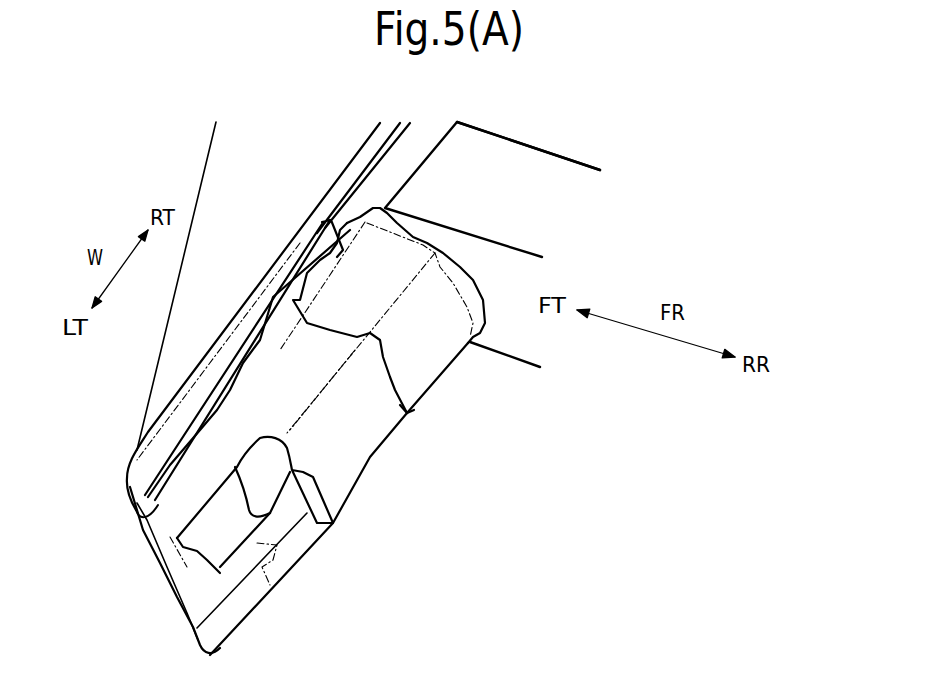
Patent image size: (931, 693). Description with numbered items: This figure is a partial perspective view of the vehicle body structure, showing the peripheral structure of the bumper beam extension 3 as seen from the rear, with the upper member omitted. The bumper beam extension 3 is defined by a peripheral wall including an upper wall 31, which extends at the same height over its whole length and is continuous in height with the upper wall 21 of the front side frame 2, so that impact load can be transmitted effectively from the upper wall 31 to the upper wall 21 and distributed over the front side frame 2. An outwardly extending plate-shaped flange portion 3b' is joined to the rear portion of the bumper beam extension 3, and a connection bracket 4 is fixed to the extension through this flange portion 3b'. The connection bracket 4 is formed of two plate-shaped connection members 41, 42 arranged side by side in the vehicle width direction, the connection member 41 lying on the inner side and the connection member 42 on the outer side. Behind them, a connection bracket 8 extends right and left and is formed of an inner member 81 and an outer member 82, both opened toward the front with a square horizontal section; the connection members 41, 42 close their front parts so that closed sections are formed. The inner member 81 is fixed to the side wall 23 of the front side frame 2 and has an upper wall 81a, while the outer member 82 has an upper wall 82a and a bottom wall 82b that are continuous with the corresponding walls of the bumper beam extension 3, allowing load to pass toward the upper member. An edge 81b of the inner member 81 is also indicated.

The front side frame 2 is at (524, 257).
The upper wall 21 is at (548, 163).
The side wall 23 is at (512, 343).
The bumper beam extension 3 is at (153, 464).
The flange portion 3b' is at (187, 396).
The upper wall 31 is at (212, 182).
The connection bracket 4 is at (268, 316).
The connection member 41 is at (357, 180).
The connection member 42 is at (268, 300).
The connection bracket 8 is at (295, 431).
The inner member 81 is at (322, 352).
The upper wall 81a is at (340, 300).
The bracket body edge 81b is at (408, 412).
The outer member 82 is at (255, 534).
The upper wall 82a is at (168, 533).
The bottom wall 82b is at (300, 538).